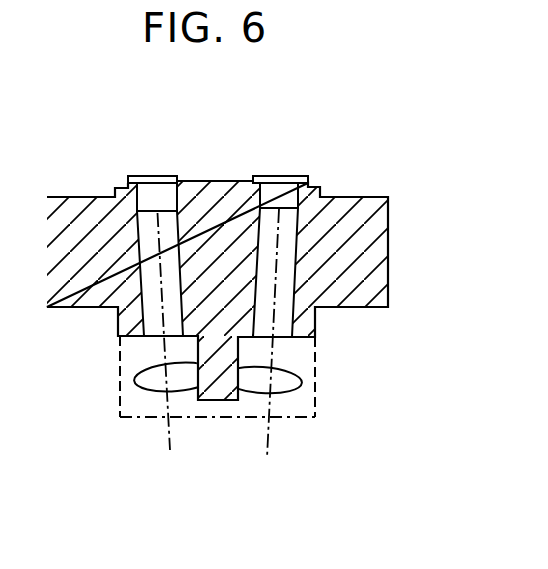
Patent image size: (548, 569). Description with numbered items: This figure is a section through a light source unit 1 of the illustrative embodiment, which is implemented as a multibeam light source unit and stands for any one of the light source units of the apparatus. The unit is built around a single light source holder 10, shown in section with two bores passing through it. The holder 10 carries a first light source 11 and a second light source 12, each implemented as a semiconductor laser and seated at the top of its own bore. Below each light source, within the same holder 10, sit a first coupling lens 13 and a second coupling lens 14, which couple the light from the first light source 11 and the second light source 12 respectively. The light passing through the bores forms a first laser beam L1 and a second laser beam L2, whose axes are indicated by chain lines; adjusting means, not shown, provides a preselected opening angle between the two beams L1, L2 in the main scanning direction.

The light source unit 1 is at (361, 337).
The light source holder 10 is at (380, 220).
The first light source 11 is at (140, 178).
The second light source 12 is at (297, 180).
The first coupling lens 13 is at (153, 387).
The second coupling lens 14 is at (285, 395).
The first laser beam L1 is at (168, 450).
The second laser beam L2 is at (268, 455).